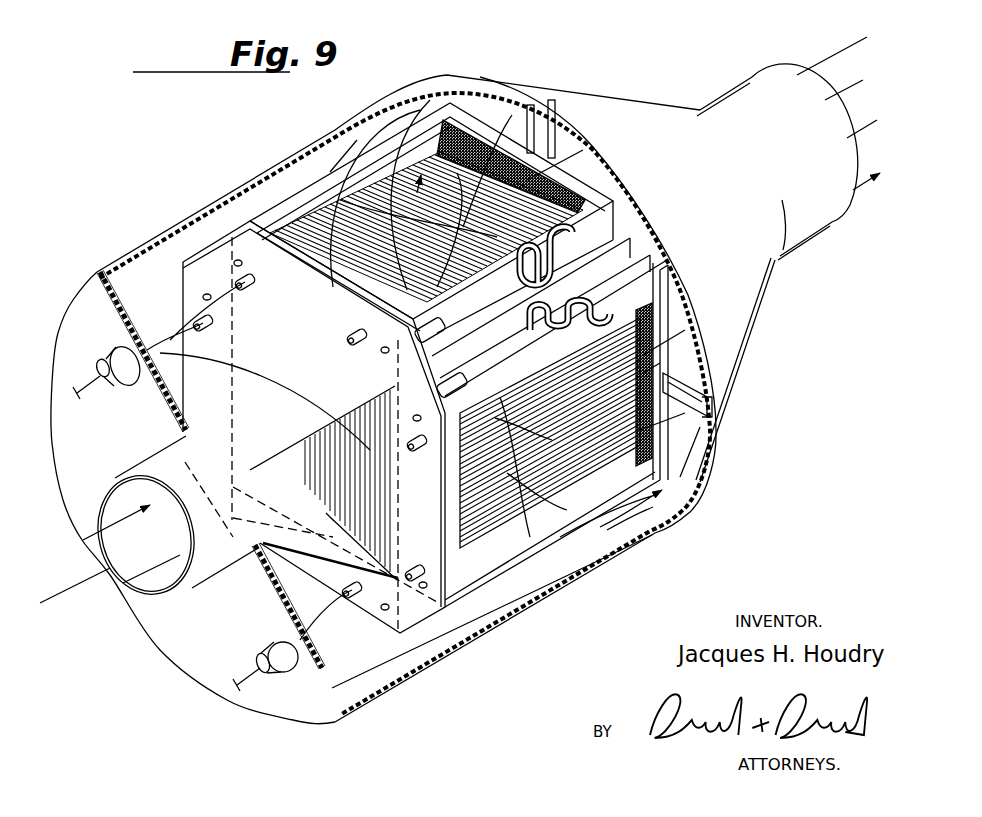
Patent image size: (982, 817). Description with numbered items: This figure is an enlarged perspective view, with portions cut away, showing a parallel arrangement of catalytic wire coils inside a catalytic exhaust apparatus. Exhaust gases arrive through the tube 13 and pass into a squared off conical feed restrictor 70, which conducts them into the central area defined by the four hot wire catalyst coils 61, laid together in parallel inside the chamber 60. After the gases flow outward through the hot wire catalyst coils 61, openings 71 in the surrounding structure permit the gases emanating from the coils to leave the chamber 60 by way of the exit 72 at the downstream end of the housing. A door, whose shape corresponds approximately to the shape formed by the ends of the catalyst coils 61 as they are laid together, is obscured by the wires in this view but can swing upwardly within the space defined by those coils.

The tube 13 is at (240, 562).
The chamber 60 is at (222, 196).
The hot wire catalyst coils 61 is at (440, 217).
The squared off conical feed restrictor 70 is at (393, 595).
The openings 71 is at (698, 447).
The exit 72 is at (813, 200).